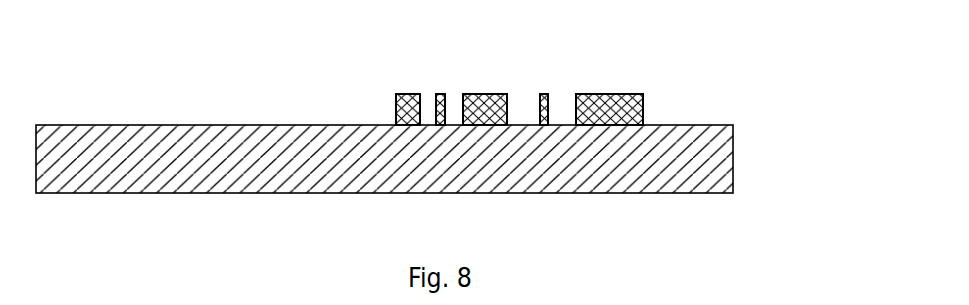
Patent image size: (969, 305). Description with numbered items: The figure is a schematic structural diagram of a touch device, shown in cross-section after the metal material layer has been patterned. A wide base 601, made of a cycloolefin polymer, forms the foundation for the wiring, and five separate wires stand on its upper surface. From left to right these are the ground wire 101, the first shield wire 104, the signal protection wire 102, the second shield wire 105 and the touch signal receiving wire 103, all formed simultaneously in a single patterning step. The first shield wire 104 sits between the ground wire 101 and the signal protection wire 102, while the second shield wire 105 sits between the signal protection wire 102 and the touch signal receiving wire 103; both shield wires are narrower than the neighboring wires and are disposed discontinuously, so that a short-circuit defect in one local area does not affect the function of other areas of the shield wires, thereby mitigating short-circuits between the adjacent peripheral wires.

The base 601 is at (688, 170).
The ground wire 101 is at (412, 110).
The first shield wire 104 is at (442, 102).
The signal protection wire 102 is at (492, 105).
The second shield wire 105 is at (547, 105).
The touch signal receiving wire 103 is at (620, 100).